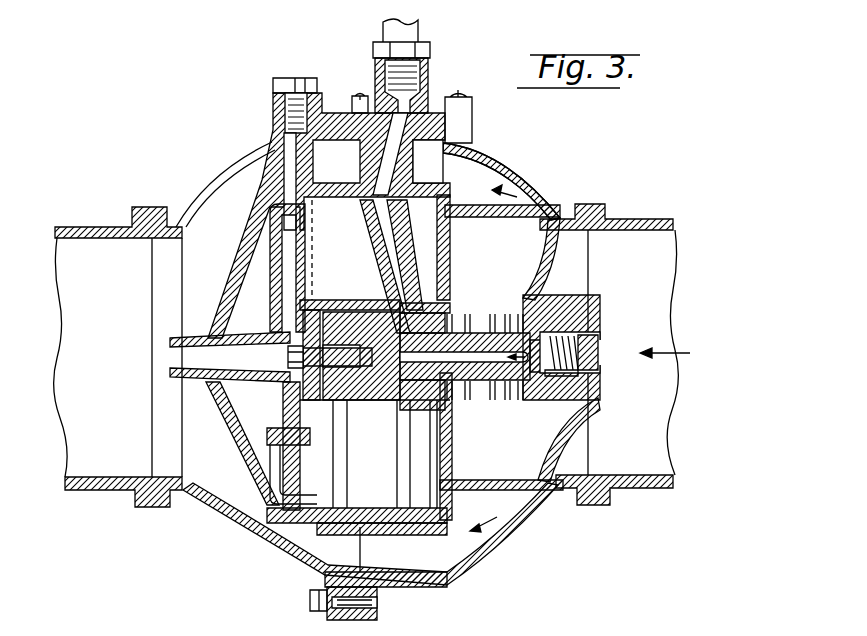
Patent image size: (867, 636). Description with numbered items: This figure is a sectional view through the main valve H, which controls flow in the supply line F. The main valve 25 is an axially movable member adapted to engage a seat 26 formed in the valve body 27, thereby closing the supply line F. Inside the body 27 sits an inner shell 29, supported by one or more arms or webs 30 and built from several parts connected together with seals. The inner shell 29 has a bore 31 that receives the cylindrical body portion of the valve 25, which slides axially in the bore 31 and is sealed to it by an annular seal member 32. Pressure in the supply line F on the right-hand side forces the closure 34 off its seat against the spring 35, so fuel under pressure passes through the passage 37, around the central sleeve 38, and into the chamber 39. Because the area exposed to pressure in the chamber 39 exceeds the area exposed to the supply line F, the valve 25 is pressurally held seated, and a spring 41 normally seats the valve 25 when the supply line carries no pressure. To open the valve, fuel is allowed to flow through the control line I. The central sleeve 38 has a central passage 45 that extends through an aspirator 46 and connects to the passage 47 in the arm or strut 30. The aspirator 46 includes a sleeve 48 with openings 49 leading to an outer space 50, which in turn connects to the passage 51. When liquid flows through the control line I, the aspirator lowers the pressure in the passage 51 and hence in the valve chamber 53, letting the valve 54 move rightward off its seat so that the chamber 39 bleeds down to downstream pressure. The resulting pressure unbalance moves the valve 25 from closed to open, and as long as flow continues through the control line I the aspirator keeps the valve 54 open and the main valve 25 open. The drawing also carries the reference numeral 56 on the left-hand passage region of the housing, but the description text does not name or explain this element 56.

The supply line F is at (87, 223).
The main valve H is at (503, 165).
The control line I is at (393, 31).
The main valve 25 is at (490, 227).
The seat 26 is at (552, 220).
The valve body 27 is at (518, 178).
The inner shell 29 is at (430, 191).
The arm or web 30 is at (365, 148).
The bore 31 is at (428, 535).
The annular seal member 32 is at (448, 514).
The closure 34 is at (590, 344).
The spring 35 is at (587, 322).
The passage 37 is at (548, 378).
The central sleeve 38 is at (483, 386).
The chamber 39 is at (498, 452).
The spring 41 is at (467, 312).
The central passage 45 is at (510, 312).
The aspirator 46 is at (397, 293).
The passage 47 is at (418, 113).
The sleeve 48 is at (380, 263).
The openings 49 is at (415, 335).
The outer space 50 is at (383, 295).
The passage 51 is at (340, 313).
The valve chamber 53 is at (327, 397).
The valve 54 is at (290, 397).
The nozzle passage 56 is at (237, 350).